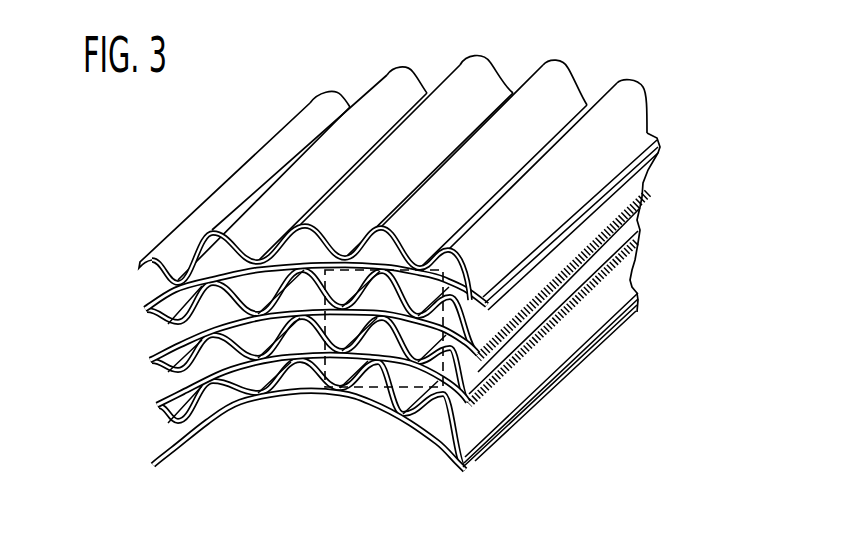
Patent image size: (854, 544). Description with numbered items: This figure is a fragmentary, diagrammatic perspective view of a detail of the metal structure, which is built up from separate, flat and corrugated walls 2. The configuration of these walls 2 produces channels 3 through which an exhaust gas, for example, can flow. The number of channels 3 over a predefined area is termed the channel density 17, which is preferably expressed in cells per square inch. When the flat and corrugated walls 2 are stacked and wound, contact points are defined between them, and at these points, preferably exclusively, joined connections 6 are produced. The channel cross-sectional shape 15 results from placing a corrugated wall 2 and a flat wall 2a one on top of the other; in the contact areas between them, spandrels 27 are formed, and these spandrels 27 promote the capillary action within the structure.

The corrugated wall 2 is at (617, 121).
The flat wall 2a is at (655, 160).
The channel 3 is at (470, 439).
The joined connection 6 is at (237, 401).
The channel cross-sectional shape 15 is at (208, 245).
The channel density 17 is at (403, 414).
The spandrel 27 is at (175, 340).